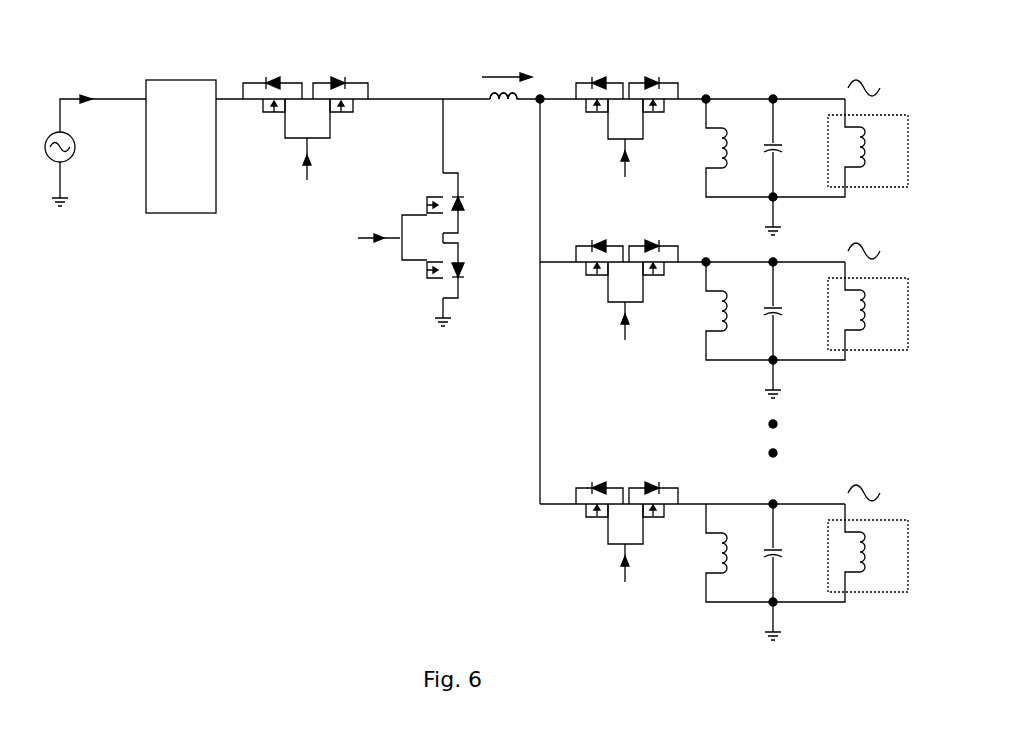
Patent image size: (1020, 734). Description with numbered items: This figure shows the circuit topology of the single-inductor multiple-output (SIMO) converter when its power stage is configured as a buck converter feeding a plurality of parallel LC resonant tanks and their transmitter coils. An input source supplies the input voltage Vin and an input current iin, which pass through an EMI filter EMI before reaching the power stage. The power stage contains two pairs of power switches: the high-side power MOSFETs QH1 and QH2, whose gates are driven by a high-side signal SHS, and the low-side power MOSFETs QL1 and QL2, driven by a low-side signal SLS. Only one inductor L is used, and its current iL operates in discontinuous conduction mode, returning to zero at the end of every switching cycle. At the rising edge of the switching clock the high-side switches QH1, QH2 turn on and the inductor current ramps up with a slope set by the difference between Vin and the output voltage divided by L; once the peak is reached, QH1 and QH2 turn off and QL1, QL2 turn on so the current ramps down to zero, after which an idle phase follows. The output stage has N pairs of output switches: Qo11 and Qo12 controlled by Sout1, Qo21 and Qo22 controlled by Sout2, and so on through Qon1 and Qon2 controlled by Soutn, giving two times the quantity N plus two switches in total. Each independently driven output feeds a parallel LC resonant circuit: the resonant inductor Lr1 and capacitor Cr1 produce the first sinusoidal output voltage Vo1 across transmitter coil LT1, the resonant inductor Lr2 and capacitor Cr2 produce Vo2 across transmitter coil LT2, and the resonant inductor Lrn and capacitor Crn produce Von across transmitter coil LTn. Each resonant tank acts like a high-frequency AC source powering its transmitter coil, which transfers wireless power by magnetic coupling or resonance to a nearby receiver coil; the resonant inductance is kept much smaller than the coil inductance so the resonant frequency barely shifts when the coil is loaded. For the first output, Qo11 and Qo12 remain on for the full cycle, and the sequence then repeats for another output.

The input voltage Vin is at (75, 152).
The input current iin is at (83, 84).
The EMI filter EMI is at (181, 146).
The high-side power switch QH1 is at (272, 83).
The high-side power switch QH2 is at (340, 83).
The high-side gate control signal SHS is at (307, 153).
The low-side power switch QL1 is at (460, 203).
The low-side power switch QL2 is at (460, 270).
The low-side gate control signal SLS is at (371, 237).
The inductor L is at (495, 87).
The inductor current iL is at (507, 68).
The output switch Qo11 is at (599, 82).
The output switch Qo12 is at (653, 82).
The output gate control signal channel 1 Sout1 is at (623, 152).
The resonant inductor channel 1 Lr1 is at (737, 146).
The resonant capacitor channel 1 Cr1 is at (789, 165).
The transmitter coil 1 LT1 is at (840, 153).
The first output voltage Vo1 is at (836, 84).
The output switch Qo21 is at (599, 245).
The output switch Qo22 is at (653, 245).
The output gate control signal channel 2 Sout2 is at (623, 316).
The resonant inductor channel 2 Lr2 is at (737, 309).
The resonant capacitor channel 2 Cr2 is at (789, 328).
The transmitter coil 2 LT2 is at (840, 316).
The output voltage channel 2 Vo2 is at (836, 247).
The output switch Qon1 is at (599, 487).
The output switch Qon2 is at (653, 487).
The output gate control signal channel n Soutn is at (623, 558).
The resonant inductor channel n Lrn is at (739, 553).
The resonant capacitor channel n Crn is at (789, 570).
The transmitter coil n LTn is at (840, 558).
The output voltage channel n Von is at (836, 489).